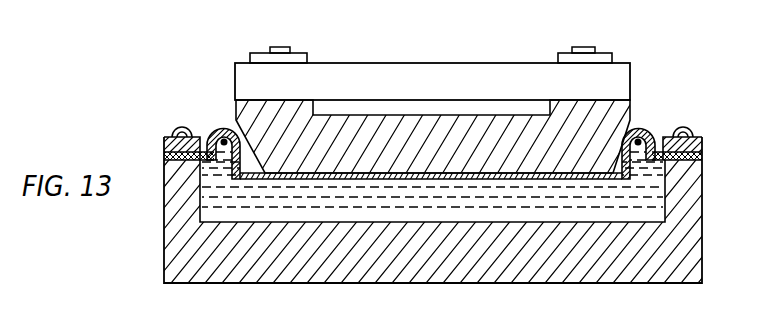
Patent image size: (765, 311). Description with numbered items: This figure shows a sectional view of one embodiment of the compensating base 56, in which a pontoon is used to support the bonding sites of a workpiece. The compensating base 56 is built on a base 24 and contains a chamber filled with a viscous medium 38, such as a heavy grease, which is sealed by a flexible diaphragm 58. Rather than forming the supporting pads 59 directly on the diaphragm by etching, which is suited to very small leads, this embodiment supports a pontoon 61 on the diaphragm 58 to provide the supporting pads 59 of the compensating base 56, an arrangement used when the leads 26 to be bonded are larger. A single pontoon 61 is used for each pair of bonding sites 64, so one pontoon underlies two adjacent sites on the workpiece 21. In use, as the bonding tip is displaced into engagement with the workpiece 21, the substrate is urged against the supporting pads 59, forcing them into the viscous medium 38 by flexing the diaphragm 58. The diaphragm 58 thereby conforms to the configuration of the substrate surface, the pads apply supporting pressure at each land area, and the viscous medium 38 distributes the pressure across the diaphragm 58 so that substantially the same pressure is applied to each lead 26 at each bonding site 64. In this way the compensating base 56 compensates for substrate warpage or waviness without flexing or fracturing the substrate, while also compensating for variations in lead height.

The workpiece 21 is at (640, 68).
The base 24 is at (688, 262).
The leads 26 is at (586, 47).
The viscous medium 38 is at (655, 204).
The compensating base 56 is at (708, 163).
The diaphragm 58 is at (485, 181).
The supporting pads 59 is at (268, 100).
The pontoon 61 is at (618, 112).
The bonding sites 64 is at (260, 45).